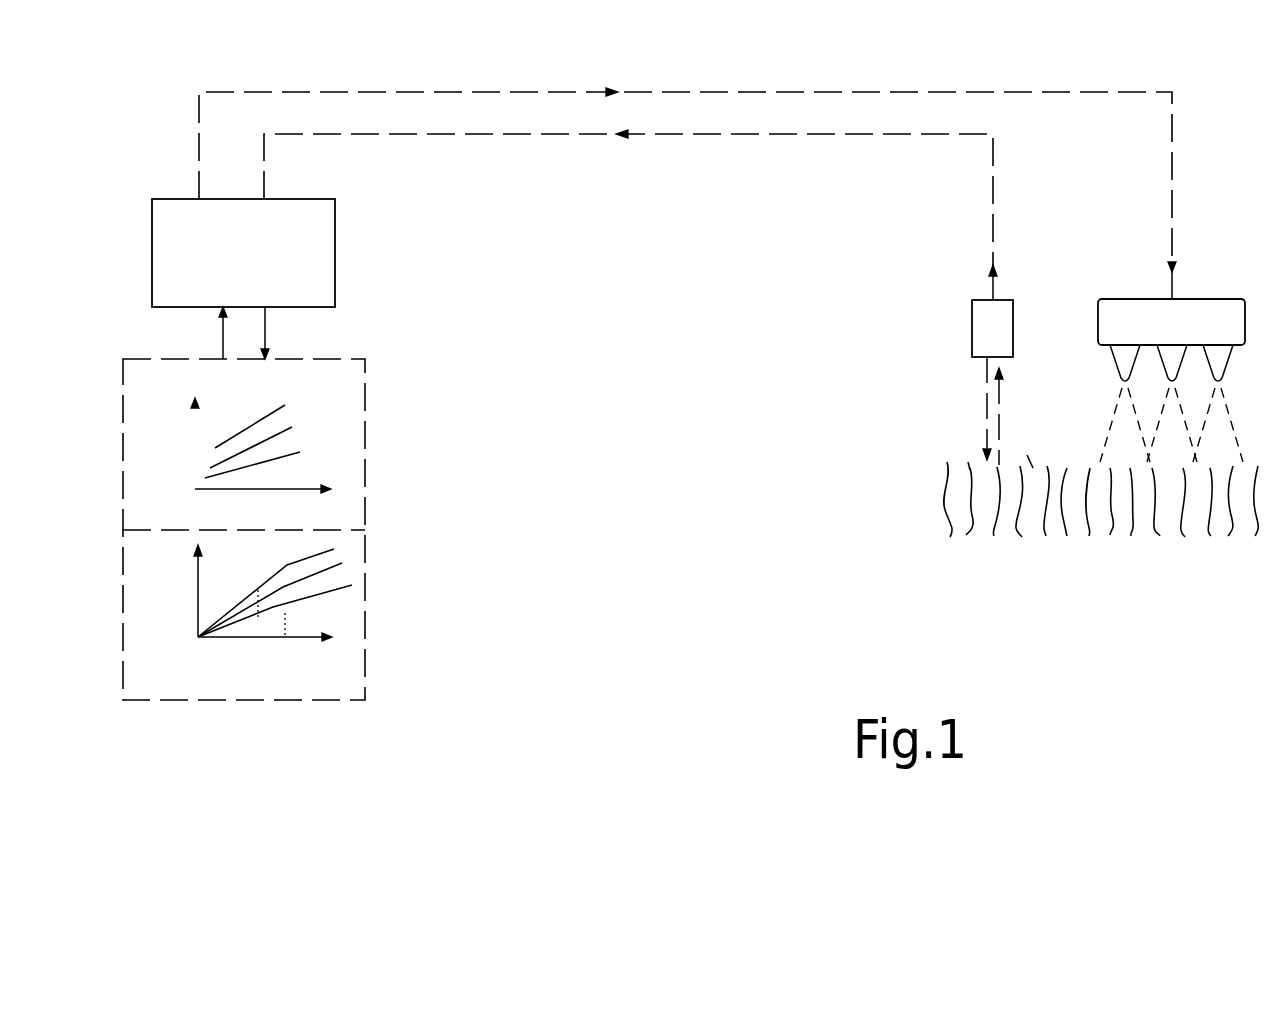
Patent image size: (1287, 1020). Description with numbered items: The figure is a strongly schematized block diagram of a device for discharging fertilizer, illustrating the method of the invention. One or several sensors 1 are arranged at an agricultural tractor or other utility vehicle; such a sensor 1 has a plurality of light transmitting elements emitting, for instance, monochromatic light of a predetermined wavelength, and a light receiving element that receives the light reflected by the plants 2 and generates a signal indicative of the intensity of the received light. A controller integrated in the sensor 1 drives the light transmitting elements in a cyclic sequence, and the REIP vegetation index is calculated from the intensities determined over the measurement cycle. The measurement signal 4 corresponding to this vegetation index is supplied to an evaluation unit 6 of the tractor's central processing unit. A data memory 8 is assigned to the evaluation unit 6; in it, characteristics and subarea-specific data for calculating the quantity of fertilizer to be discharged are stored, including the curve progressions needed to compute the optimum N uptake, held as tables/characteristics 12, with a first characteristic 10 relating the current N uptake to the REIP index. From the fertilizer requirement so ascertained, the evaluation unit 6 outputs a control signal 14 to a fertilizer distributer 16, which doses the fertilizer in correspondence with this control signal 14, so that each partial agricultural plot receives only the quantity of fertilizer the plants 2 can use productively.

The sensor 1 is at (993, 328).
The plants 2 is at (963, 480).
The measurement signal 4 is at (700, 134).
The evaluation unit 6 is at (234, 266).
The data memory 8 is at (372, 408).
The first characteristic graph (Ncur vs REIP) 10 is at (332, 467).
The tables/characteristics 12 is at (340, 612).
The control signal 14 is at (235, 93).
The fertilizer distributer 16 is at (1157, 336).